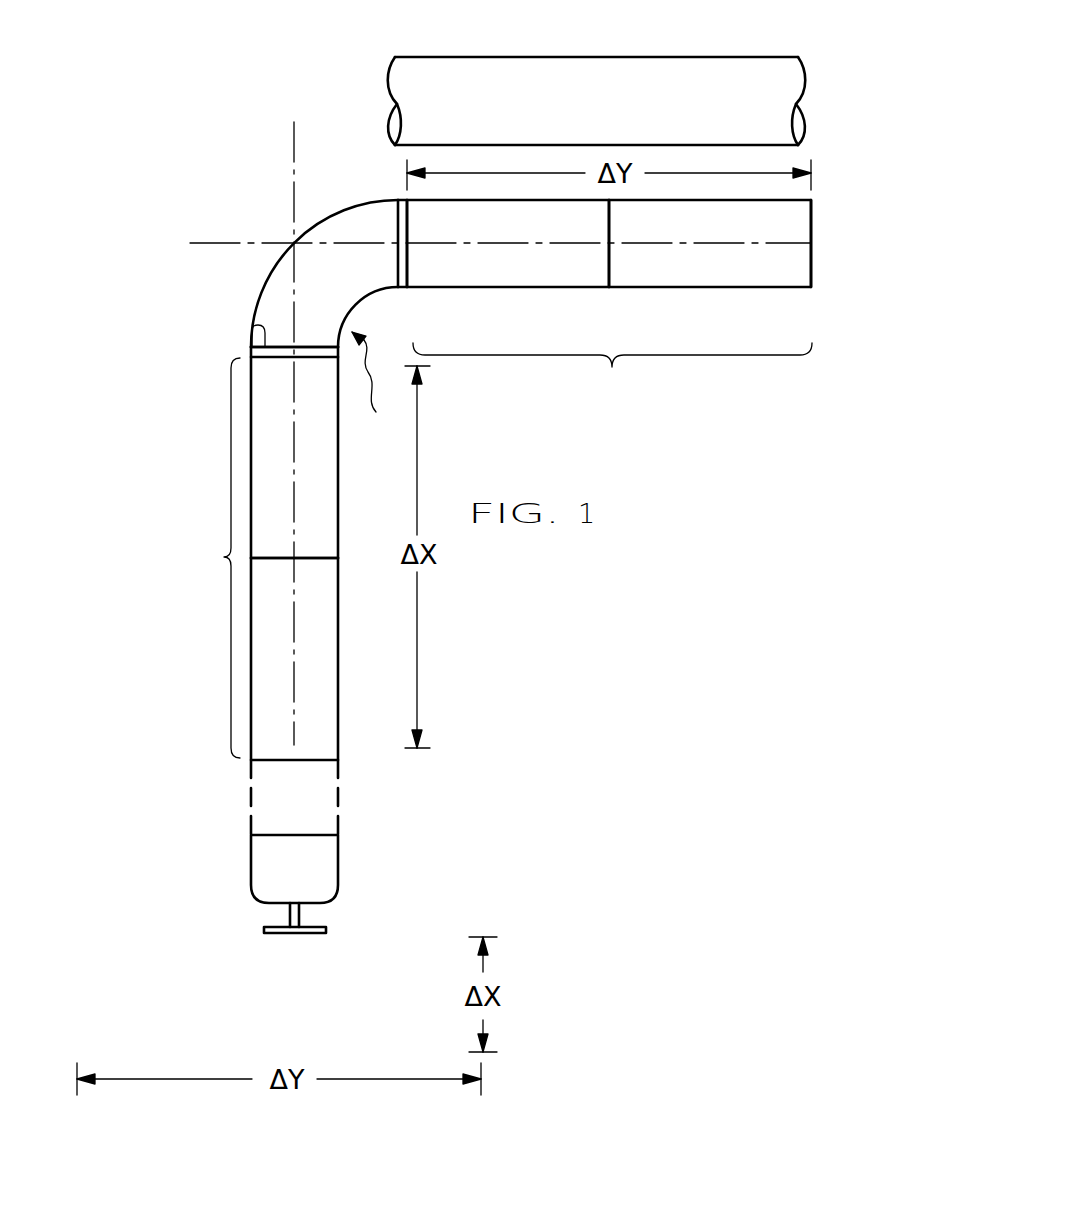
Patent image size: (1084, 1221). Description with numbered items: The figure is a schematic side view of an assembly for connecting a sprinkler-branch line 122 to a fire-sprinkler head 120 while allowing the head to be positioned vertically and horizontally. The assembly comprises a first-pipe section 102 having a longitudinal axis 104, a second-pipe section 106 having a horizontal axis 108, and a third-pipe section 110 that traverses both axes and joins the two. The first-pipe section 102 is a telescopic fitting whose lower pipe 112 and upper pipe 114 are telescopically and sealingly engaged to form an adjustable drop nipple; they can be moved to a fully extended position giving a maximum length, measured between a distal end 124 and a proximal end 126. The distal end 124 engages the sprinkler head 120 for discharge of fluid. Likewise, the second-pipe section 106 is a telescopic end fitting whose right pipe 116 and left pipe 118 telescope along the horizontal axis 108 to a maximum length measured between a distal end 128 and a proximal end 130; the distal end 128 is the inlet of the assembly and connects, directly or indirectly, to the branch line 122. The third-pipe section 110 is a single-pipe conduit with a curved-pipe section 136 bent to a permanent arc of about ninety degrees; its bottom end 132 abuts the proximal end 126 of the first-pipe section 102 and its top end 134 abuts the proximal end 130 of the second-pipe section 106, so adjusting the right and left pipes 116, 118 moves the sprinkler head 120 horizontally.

The first-pipe section 102 is at (273, 521).
The longitudinal axis 104 is at (294, 130).
The second-pipe section 106 is at (618, 280).
The horizontal axis 108 is at (204, 243).
The third-pipe section 110 is at (356, 304).
The lower pipe 112 is at (338, 664).
The upper pipe 114 is at (338, 499).
The right pipe 116 is at (694, 290).
The left pipe 118 is at (486, 290).
The sprinkler head 120 is at (338, 865).
The sprinkler-branch line 122 is at (466, 57).
The distal end 124 is at (338, 790).
The proximal end 126 is at (252, 352).
The distal end 128 is at (811, 265).
The proximal end 130 is at (398, 217).
The bottom end 132 is at (252, 325).
The top end 134 is at (398, 268).
The curved-pipe section 136 is at (379, 388).